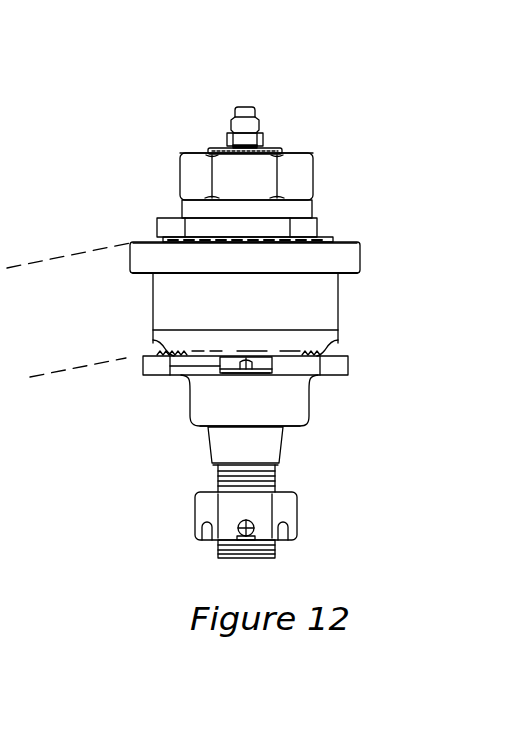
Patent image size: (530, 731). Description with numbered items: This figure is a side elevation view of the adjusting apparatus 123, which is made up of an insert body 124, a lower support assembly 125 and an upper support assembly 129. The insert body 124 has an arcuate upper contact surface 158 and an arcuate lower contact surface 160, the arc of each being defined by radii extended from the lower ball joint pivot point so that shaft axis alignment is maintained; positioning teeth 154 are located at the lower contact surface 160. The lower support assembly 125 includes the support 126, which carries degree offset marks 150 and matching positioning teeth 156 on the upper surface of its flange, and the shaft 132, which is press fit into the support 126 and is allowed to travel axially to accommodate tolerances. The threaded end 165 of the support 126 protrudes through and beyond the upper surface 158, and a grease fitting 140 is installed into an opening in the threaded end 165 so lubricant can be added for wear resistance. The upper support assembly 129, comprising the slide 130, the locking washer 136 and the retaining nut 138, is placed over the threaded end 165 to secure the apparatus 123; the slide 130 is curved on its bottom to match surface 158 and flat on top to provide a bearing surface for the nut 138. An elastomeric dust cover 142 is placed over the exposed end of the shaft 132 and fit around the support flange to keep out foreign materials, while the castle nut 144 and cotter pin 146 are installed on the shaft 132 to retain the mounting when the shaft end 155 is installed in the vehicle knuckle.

The adjusting apparatus 123 is at (105, 316).
The insert body 124 is at (136, 278).
The lower support assembly 125 is at (340, 414).
The support 126 is at (250, 365).
The upper support assembly 129 is at (181, 140).
The slide 130 is at (316, 227).
The shaft 132 is at (277, 443).
The locking washer 136 is at (312, 210).
The retaining nut 138 is at (183, 177).
The grease fitting 140 is at (256, 107).
The dust cover 142 is at (197, 426).
The castle nut 144 is at (288, 505).
The cotter pin 146 is at (238, 522).
The degree offset marks 150 is at (226, 373).
The positioning teeth 154 is at (158, 352).
The shaft end 155 is at (273, 555).
The matching positioning teeth 156 is at (182, 370).
The upper contact surface 158 is at (145, 240).
The lower contact surface 160 is at (322, 355).
The threaded end 165 is at (277, 147).